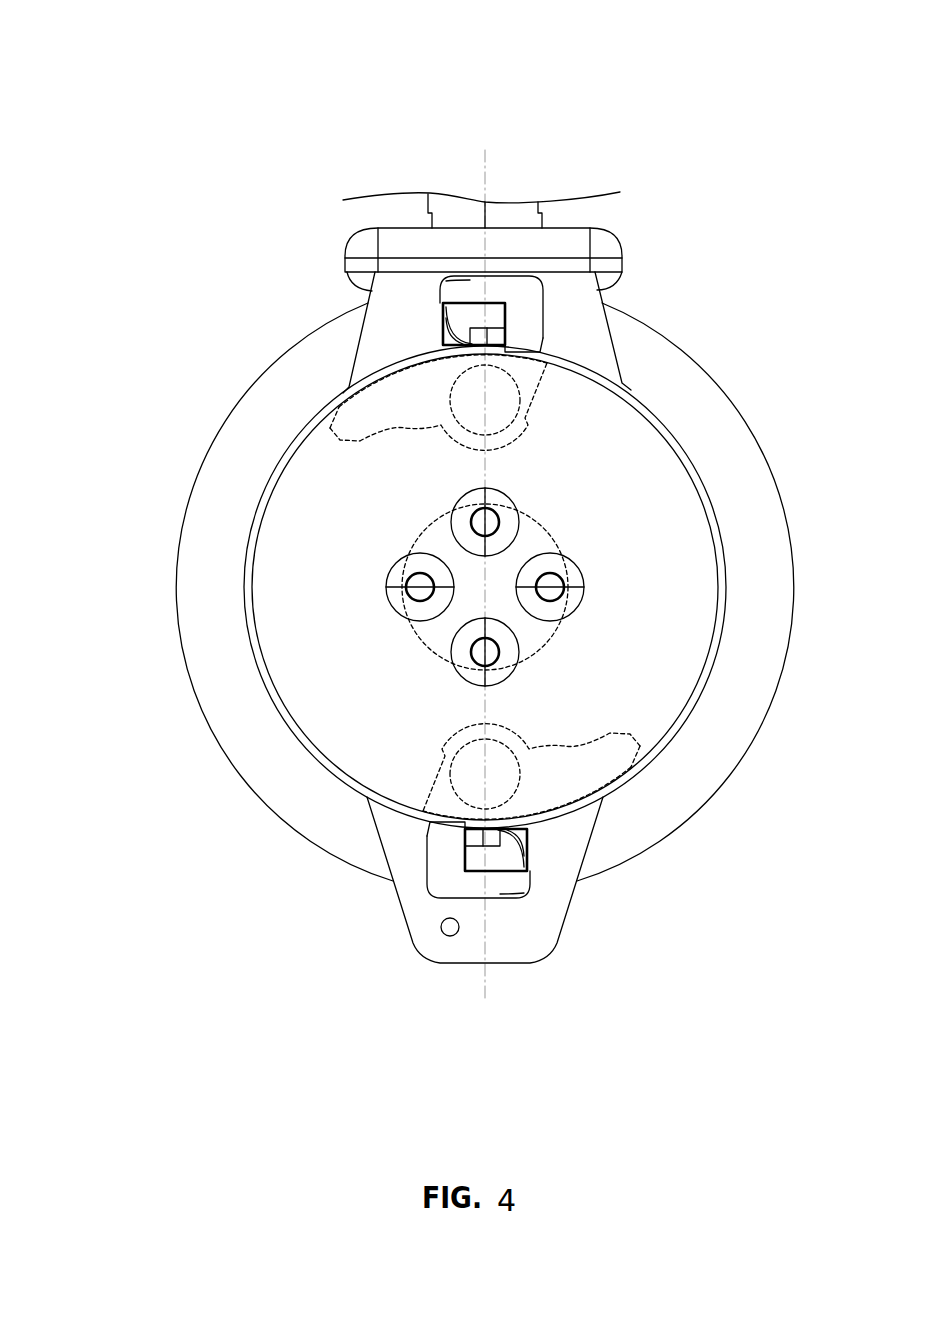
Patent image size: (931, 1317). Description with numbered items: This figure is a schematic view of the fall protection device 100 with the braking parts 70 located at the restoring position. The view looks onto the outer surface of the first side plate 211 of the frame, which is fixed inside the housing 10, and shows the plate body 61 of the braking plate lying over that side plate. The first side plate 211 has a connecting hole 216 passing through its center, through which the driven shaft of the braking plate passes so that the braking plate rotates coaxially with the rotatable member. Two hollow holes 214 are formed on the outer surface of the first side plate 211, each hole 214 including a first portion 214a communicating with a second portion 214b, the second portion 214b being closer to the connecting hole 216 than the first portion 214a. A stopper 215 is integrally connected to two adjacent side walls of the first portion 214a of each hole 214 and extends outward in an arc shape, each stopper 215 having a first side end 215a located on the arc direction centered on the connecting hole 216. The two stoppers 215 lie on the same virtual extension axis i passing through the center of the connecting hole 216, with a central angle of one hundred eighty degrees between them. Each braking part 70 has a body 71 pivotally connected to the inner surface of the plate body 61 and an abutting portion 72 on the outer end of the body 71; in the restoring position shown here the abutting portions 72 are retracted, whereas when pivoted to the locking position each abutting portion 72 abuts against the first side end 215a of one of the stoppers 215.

The fall protection device 100 is at (775, 160).
The housing 10 is at (178, 612).
The plate body 61 is at (335, 710).
The braking parts 70 is at (620, 779).
The body 71 is at (523, 417).
The abutting portion 72 is at (338, 432).
The first side plate 211 is at (392, 307).
The holes 214 is at (758, 222).
The first portion 214a is at (545, 302).
The second portion 214b is at (546, 346).
The stopper 215 is at (477, 330).
The first side end 215a is at (487, 352).
The connecting hole 216 is at (567, 587).
The virtual extension axis i is at (485, 183).